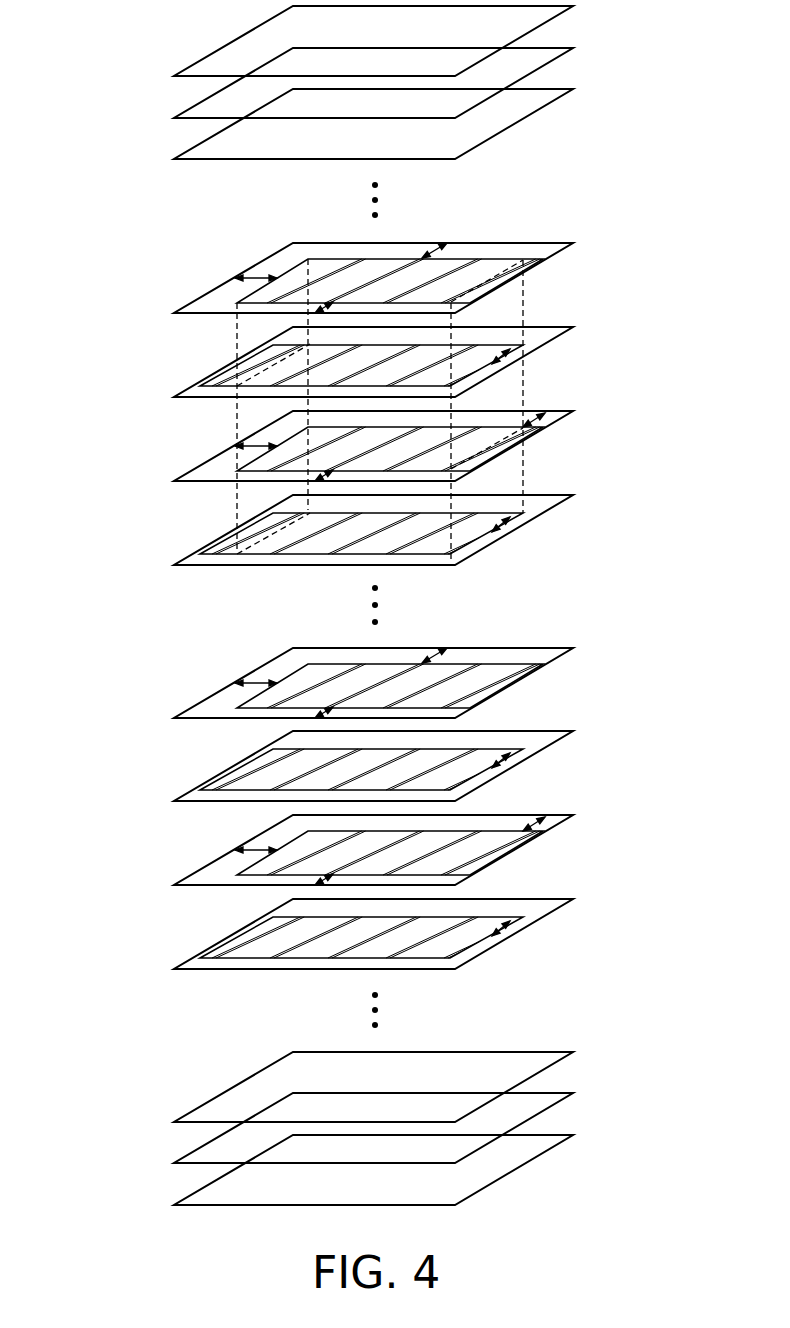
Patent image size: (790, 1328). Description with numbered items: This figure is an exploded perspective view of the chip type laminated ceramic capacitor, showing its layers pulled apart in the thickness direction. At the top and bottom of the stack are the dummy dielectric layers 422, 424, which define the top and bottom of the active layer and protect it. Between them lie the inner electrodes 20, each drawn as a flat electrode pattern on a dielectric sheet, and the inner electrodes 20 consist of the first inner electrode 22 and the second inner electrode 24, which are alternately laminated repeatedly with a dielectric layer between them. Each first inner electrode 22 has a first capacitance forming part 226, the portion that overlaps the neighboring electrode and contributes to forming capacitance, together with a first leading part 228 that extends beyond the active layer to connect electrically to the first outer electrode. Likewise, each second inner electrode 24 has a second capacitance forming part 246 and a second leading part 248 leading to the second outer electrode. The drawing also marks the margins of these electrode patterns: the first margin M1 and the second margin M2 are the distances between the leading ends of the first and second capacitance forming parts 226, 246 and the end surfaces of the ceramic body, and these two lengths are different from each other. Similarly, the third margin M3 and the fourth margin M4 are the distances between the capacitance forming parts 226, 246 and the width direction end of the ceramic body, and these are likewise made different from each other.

The inner electrodes 20 is at (696, 622).
The first inner electrode 22 is at (347, 534).
The second inner electrode 24 is at (462, 406).
The first capacitance forming part 226 is at (270, 378).
The first leading part 228 is at (270, 355).
The second capacitance forming part 246 is at (463, 258).
The second leading part 248 is at (497, 282).
The dummy dielectric layer 422 is at (599, 8).
The dummy dielectric layer 424 is at (601, 1055).
The first margin M1 is at (517, 352).
The second margin M2 is at (258, 279).
The third margin M3 is at (428, 256).
The fourth margin M4 is at (325, 308).